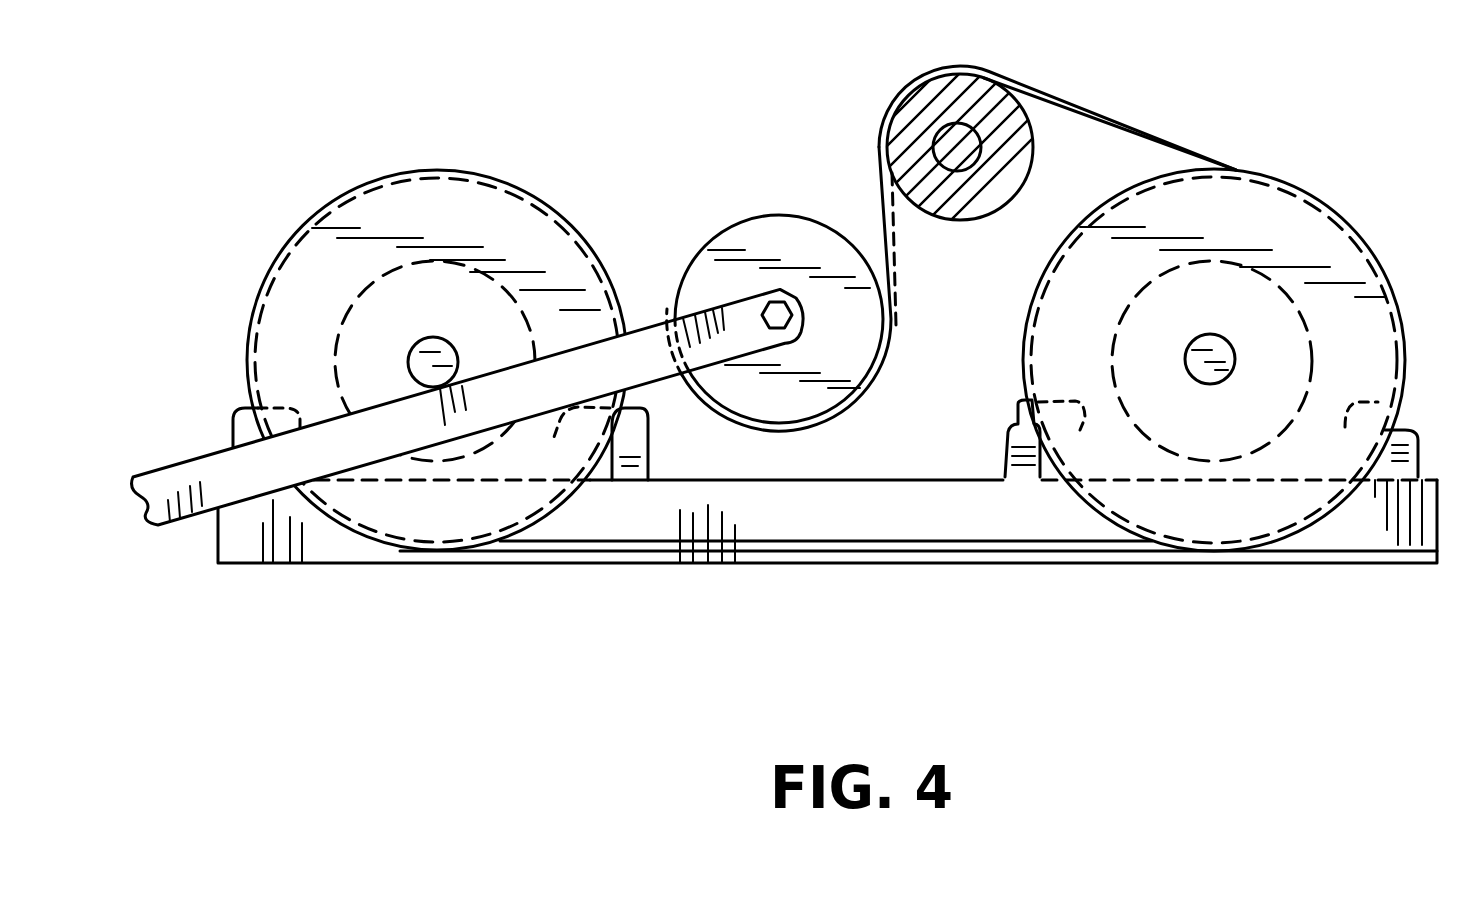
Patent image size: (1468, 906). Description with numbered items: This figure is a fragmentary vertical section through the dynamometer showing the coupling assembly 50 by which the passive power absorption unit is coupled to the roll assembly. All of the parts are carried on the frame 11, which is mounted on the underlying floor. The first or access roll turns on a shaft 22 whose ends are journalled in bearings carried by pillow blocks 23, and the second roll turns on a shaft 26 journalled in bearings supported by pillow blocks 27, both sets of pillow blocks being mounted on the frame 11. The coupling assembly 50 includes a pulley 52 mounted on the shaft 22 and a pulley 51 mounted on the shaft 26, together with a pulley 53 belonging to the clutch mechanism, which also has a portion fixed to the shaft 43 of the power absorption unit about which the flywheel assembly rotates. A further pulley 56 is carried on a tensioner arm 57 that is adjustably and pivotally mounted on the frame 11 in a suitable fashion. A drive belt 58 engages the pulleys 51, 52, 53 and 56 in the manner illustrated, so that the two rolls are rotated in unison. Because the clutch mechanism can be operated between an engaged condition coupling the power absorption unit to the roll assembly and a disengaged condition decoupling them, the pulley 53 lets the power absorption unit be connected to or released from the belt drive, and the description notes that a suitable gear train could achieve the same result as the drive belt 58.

The frame 11 is at (740, 577).
The shaft 22 is at (428, 356).
The pillow blocks 23 is at (648, 471).
The shaft 26 is at (1236, 356).
The pillow blocks 27 is at (1418, 453).
The shaft 43 is at (958, 221).
The coupling assembly 50 is at (684, 262).
The pulley 51 is at (1211, 360).
The pulley 52 is at (396, 360).
The pulley 53 is at (979, 155).
The pulley 56 is at (778, 222).
The tensioner arm 57 is at (468, 407).
The drive belt 58 is at (1165, 140).